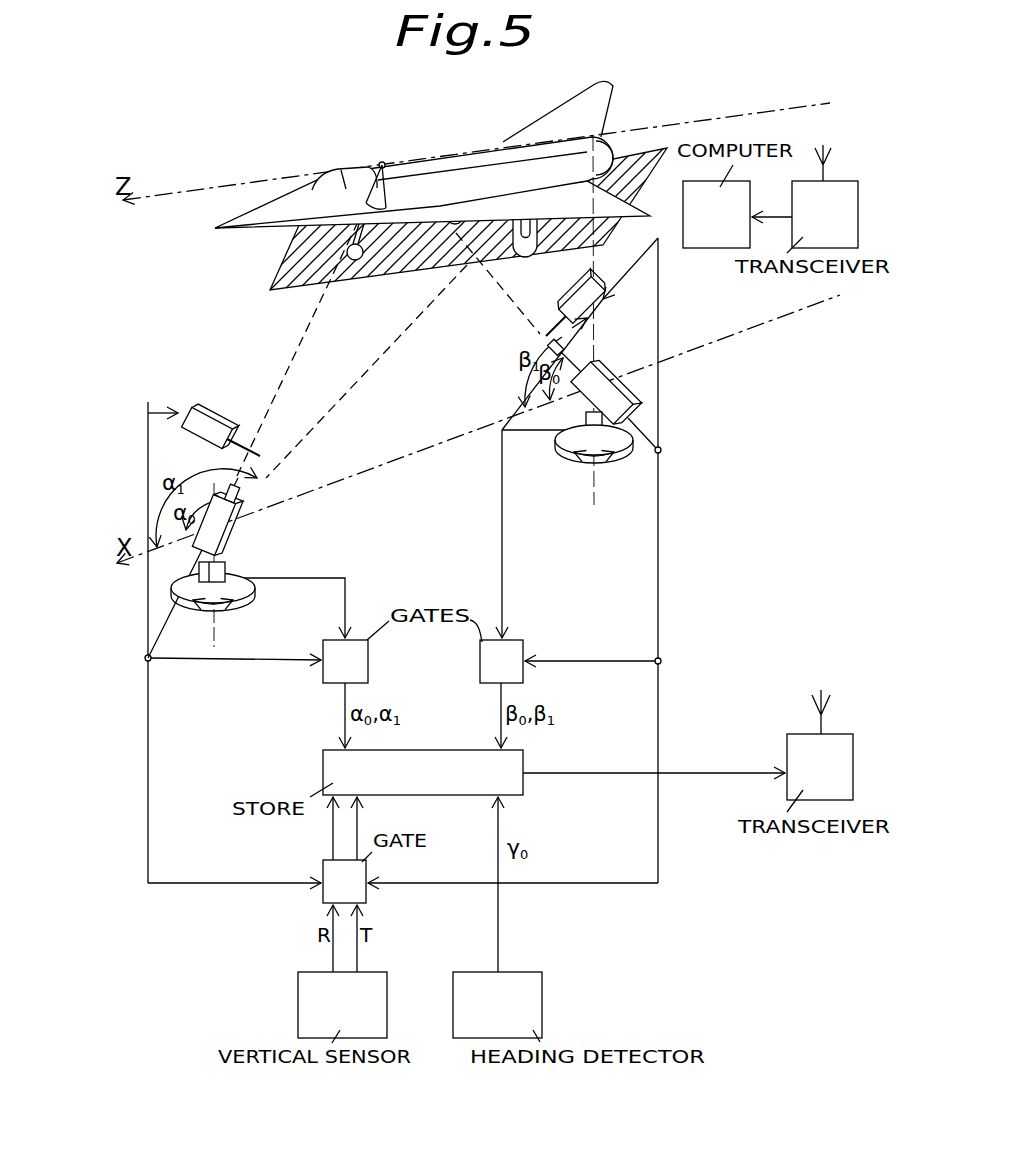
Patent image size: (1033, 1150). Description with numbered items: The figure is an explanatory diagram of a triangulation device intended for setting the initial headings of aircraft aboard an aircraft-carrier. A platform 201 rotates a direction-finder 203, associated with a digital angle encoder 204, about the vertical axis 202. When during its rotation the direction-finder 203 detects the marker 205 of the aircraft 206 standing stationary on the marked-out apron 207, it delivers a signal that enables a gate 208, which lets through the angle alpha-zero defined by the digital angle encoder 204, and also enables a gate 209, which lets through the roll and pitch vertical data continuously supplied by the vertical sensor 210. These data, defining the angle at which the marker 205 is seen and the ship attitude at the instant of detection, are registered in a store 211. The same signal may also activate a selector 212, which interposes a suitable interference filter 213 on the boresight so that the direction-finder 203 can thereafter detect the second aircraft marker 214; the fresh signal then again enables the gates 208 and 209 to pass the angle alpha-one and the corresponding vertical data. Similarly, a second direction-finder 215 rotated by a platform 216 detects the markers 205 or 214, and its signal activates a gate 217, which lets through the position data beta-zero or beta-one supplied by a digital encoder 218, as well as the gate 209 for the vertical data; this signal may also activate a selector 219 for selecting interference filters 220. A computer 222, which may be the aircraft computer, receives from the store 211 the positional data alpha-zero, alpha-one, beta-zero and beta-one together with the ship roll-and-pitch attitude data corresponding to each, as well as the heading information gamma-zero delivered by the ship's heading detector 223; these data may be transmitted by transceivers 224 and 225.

The platform 201 is at (240, 600).
The vertical axis 202 is at (214, 633).
The direction-finder 203 is at (230, 530).
The digital angle encoder 204 is at (223, 570).
The marker 205 is at (382, 164).
The aircraft 206 is at (288, 205).
The marked-out apron 207 is at (292, 278).
The gate 208 is at (345, 661).
The gate 209 is at (344, 881).
The vertical sensor 210 is at (342, 1005).
The store 211 is at (340, 763).
The selector 212 is at (209, 418).
The interference filter 213 is at (261, 452).
The second aircraft marker 214 is at (600, 117).
The direction-finder 215 is at (623, 395).
The platform 216 is at (608, 470).
The gate 217 is at (501, 661).
The digital encoder 218 is at (632, 452).
The selector 219 is at (605, 298).
The interference filters 220 is at (545, 334).
The computer 222 is at (716, 214).
The heading detector 223 is at (497, 1005).
The transceiver 224 is at (820, 767).
The transceiver 225 is at (825, 214).